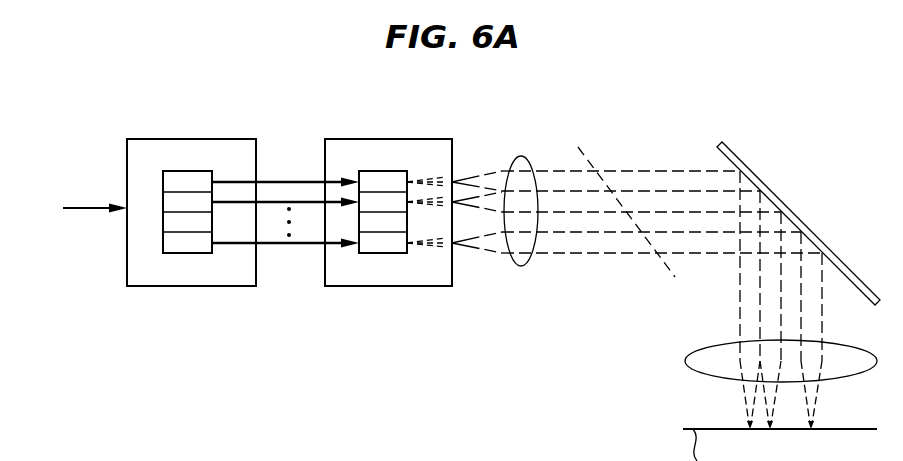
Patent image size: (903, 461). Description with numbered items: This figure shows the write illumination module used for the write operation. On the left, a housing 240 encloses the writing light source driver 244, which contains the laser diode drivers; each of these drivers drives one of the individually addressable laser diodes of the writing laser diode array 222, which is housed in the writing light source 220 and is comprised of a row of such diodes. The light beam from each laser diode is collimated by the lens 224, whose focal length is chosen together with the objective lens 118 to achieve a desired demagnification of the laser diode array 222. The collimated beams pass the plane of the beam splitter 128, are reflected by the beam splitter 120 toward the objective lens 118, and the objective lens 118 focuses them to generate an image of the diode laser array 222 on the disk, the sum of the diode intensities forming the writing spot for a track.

The first module housing 240 is at (190, 139).
The writing light source driver 244 is at (190, 253).
The writing light source 220 is at (385, 139).
The writing laser diode array 222 is at (388, 253).
The collimating lens 224 is at (528, 267).
The beam splitter 128 is at (590, 157).
The beam splitter 120 is at (733, 152).
The objective lens 118 is at (683, 360).